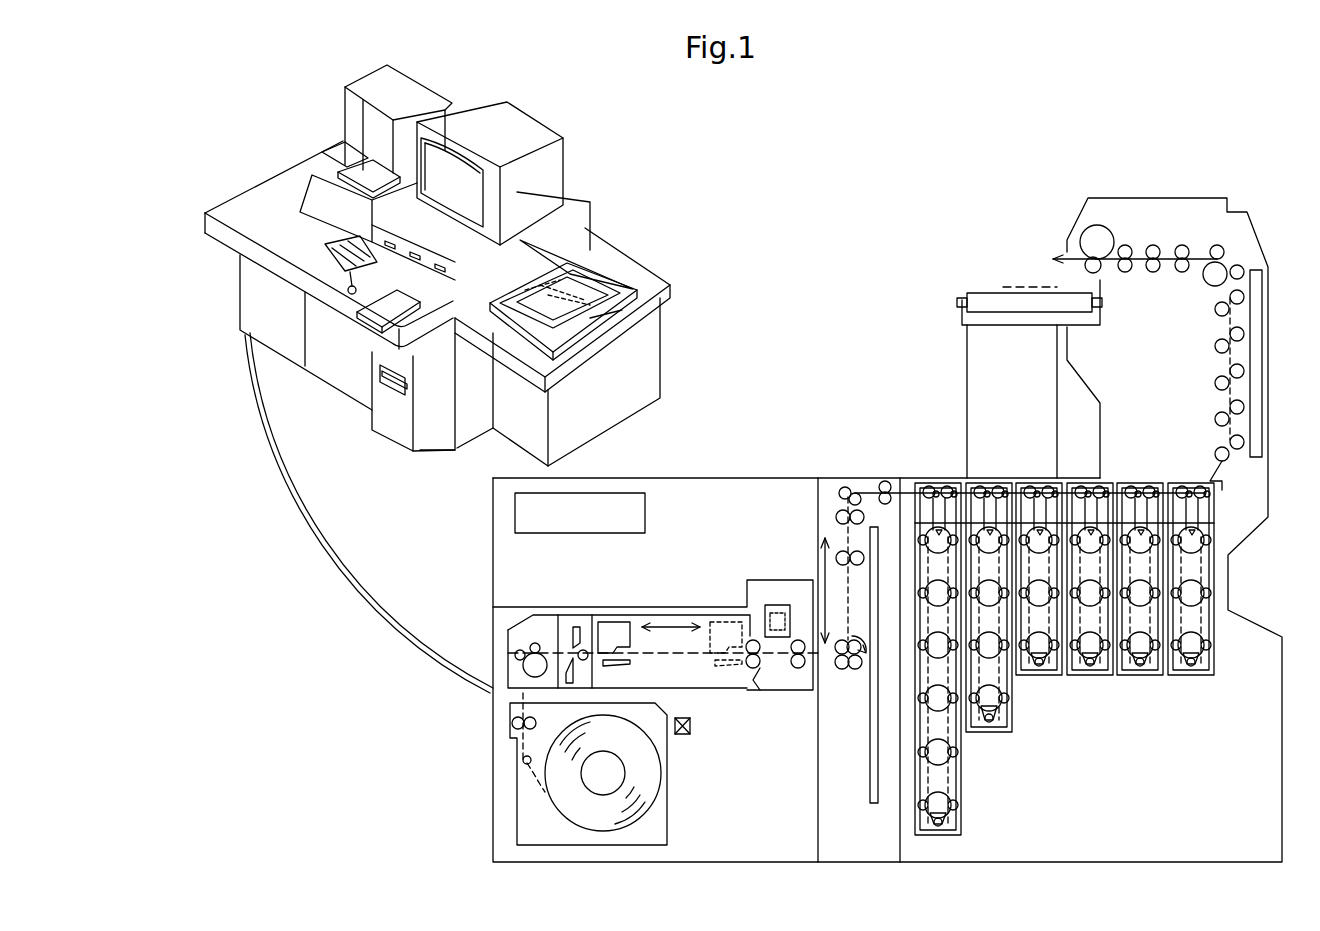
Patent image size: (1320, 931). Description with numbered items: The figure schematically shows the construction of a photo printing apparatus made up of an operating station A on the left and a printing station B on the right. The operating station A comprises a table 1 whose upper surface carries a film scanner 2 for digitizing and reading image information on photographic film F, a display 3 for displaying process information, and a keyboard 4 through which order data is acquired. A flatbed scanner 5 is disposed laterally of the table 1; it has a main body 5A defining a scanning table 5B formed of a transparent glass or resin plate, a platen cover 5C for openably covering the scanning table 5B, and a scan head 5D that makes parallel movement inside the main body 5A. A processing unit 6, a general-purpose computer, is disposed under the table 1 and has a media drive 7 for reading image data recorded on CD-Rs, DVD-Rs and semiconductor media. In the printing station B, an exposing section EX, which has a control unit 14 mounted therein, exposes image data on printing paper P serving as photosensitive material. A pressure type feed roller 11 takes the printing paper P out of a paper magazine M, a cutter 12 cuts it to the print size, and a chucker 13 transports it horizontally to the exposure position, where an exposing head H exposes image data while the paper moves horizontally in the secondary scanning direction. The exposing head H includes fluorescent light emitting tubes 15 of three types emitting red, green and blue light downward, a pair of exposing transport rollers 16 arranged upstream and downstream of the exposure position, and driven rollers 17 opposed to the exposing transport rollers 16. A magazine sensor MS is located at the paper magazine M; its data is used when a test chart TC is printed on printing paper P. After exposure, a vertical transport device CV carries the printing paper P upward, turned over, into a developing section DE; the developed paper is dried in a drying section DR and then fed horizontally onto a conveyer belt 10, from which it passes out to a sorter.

The operating station A is at (236, 166).
The table 1 is at (214, 211).
The film scanner 2 is at (350, 101).
The display 3 is at (480, 116).
The photographic film F is at (333, 153).
The keyboard 4 is at (345, 268).
The test chart TC is at (540, 298).
The flatbed scanner 5 is at (618, 273).
The main body 5A is at (592, 323).
The scanning table 5B is at (587, 318).
The platen cover 5C is at (583, 264).
The scan head 5D is at (622, 310).
The media drive 7 is at (402, 383).
The processing unit 6 is at (413, 458).
The printing station B is at (487, 768).
The exposing section EX is at (682, 476).
The control unit 14 is at (520, 523).
The pressure type feed roller 11 is at (530, 662).
The cutter 12 is at (573, 626).
The chucker 13 is at (622, 622).
The exposing transport rollers 16 is at (751, 638).
The driven rollers 17 is at (760, 690).
The exposing head H is at (772, 603).
The fluorescent light emitting tubes 15 is at (775, 604).
The paper magazine M is at (667, 808).
The magazine sensor MS is at (692, 727).
The printing paper P is at (511, 693).
The vertical transport device CV is at (887, 477).
The conveyer belt 10 is at (992, 292).
The drying section DR is at (1202, 369).
The developing section DE is at (1130, 683).